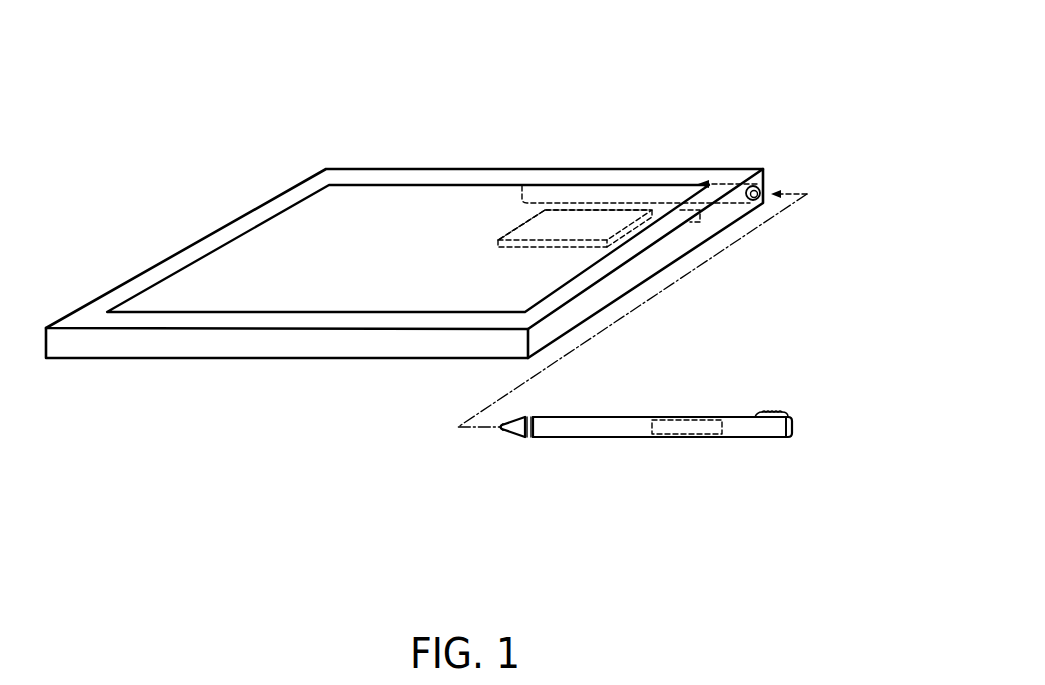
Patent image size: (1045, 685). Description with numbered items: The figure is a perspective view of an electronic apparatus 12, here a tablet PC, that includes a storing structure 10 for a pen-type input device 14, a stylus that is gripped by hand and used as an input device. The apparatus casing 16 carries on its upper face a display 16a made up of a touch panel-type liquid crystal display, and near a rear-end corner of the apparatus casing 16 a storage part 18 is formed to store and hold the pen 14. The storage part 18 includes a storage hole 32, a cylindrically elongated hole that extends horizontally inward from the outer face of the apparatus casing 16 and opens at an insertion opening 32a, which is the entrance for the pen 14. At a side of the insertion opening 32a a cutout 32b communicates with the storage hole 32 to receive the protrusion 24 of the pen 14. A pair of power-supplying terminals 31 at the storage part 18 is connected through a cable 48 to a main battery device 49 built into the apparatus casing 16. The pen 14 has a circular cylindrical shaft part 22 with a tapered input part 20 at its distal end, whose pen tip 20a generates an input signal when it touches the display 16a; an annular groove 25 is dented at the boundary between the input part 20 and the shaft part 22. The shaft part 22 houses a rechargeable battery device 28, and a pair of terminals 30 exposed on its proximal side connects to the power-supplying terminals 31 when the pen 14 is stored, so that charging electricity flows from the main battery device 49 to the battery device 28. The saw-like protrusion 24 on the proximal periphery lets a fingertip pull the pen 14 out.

The electronic apparatus 12 is at (775, 36).
The storing structure 10 is at (771, 181).
The apparatus casing 16 is at (255, 202).
The display 16a is at (417, 198).
The storage part 18 is at (764, 205).
The storage hole 32 is at (611, 203).
The insertion opening 32a is at (745, 192).
The cutout 32b is at (762, 203).
The cable 48 is at (656, 222).
The main battery device 49 is at (515, 226).
The power-supplying terminals 31 is at (697, 212).
The pen-type input device 14 is at (638, 465).
The input part 20 is at (513, 431).
The pen tip 20a is at (500, 429).
The annular groove 25 is at (530, 439).
The shaft part 22 is at (596, 438).
The battery device 28 is at (695, 438).
The protrusion 24 is at (780, 412).
The terminals 30 is at (763, 438).